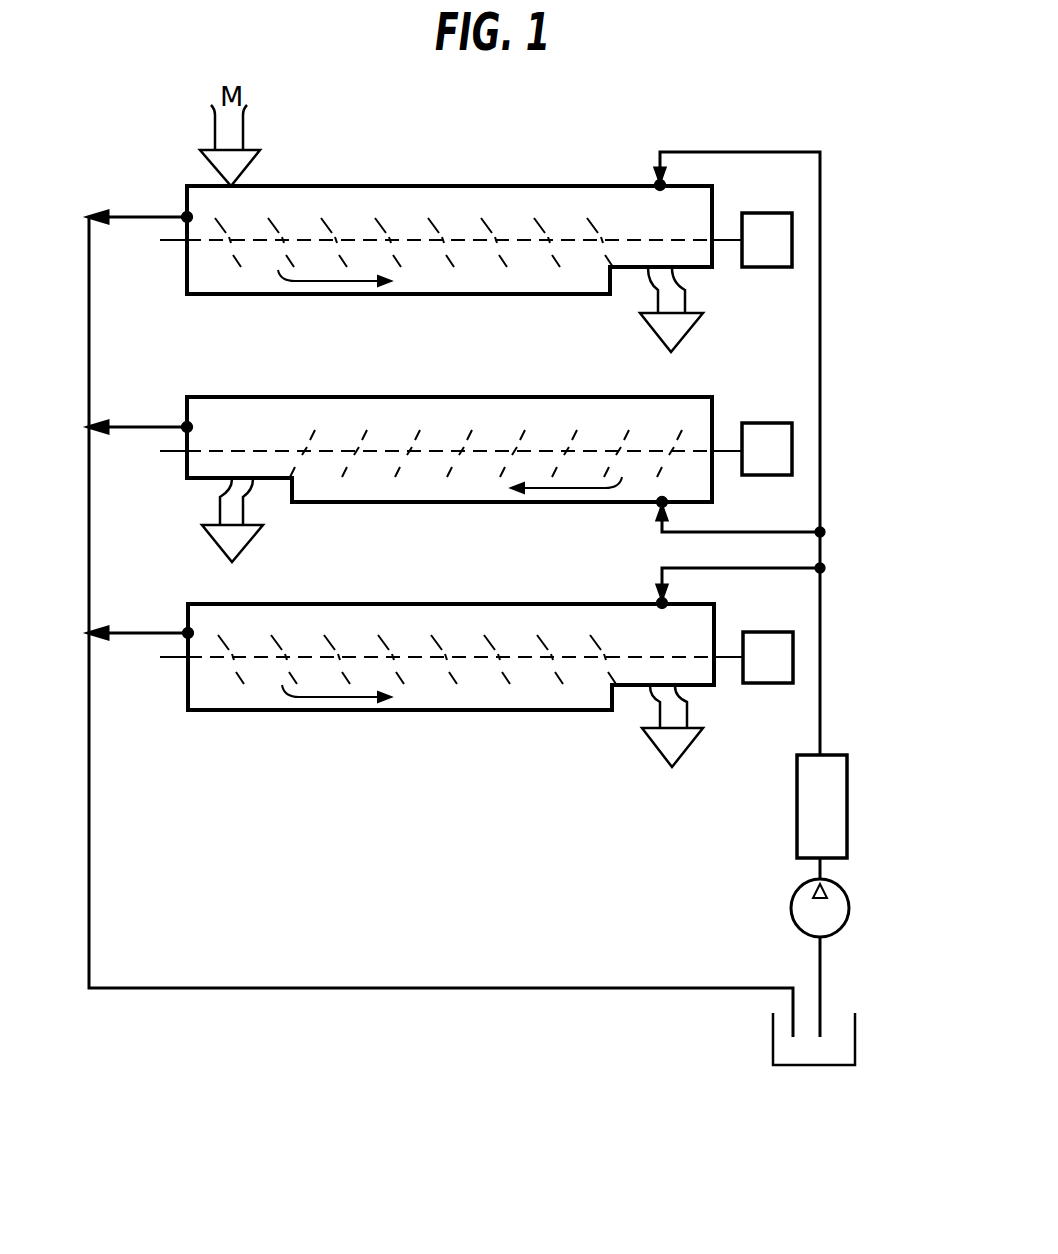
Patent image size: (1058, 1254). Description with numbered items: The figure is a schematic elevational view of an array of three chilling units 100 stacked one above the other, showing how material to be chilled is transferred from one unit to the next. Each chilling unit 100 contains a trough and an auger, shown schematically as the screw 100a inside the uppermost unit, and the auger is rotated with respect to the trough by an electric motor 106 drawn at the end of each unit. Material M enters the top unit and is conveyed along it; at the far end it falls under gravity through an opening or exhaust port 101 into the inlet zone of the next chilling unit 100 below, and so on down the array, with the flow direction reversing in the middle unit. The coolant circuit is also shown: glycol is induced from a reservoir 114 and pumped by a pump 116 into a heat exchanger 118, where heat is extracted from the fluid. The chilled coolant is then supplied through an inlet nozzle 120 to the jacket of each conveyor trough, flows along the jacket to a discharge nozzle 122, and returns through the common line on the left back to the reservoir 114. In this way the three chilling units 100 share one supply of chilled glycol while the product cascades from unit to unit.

The chilling unit 100 is at (164, 192).
The screw 100a is at (275, 202).
The exhaust port 101 is at (692, 272).
The electric motor 106 is at (775, 231).
The reservoir 114 is at (830, 1066).
The pump 116 is at (836, 907).
The heat exchanger 118 is at (823, 795).
The inlet nozzle 120 is at (656, 182).
The discharge nozzle 122 is at (183, 218).